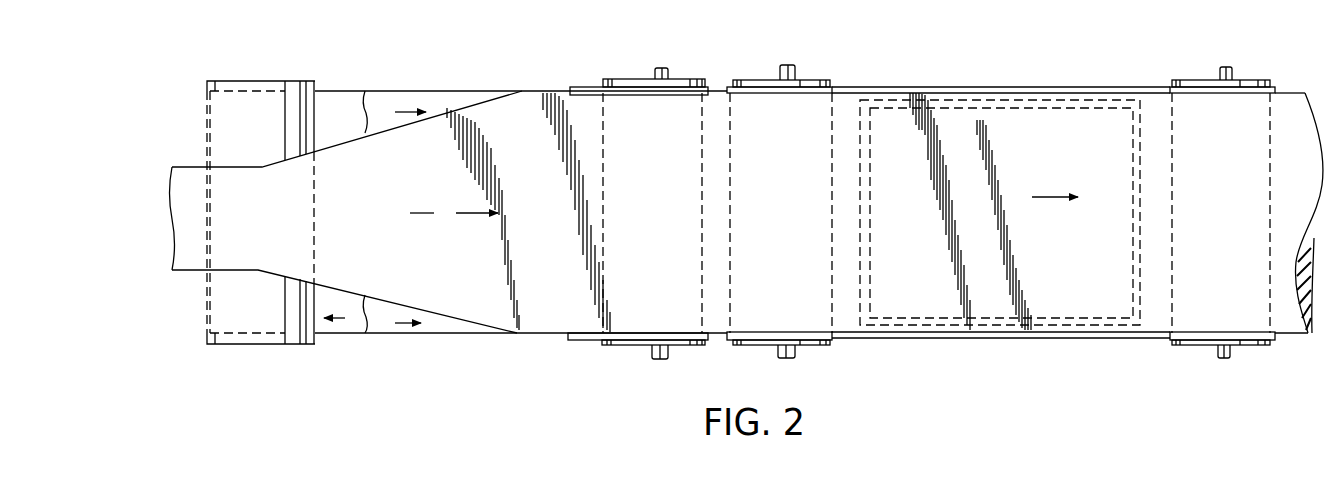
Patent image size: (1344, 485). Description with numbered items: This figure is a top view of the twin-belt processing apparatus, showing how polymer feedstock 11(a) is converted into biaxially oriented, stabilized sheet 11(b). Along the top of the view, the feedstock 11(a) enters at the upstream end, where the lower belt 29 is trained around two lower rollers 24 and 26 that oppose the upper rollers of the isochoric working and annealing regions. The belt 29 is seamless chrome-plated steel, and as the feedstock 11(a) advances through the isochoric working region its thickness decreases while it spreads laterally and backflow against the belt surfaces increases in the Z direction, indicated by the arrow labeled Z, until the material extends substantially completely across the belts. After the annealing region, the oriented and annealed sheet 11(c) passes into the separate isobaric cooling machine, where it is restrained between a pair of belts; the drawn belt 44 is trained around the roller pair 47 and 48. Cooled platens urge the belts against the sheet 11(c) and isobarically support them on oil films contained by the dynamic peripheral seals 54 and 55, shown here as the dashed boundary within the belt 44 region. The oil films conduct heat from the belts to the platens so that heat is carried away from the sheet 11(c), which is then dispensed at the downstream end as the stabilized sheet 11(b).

The feedstock 11 is at (286, 223).
The lower roller 24 is at (296, 90).
The lower roller 26 is at (619, 85).
The belt 29 is at (440, 103).
The belt 44 is at (944, 87).
The roller 47 is at (822, 80).
The roller 48 is at (1255, 80).
The dynamic peripheral seal 54 is at (1000, 212).
The dynamic peripheral seal 55 is at (863, 230).
The Z direction Z is at (454, 213).